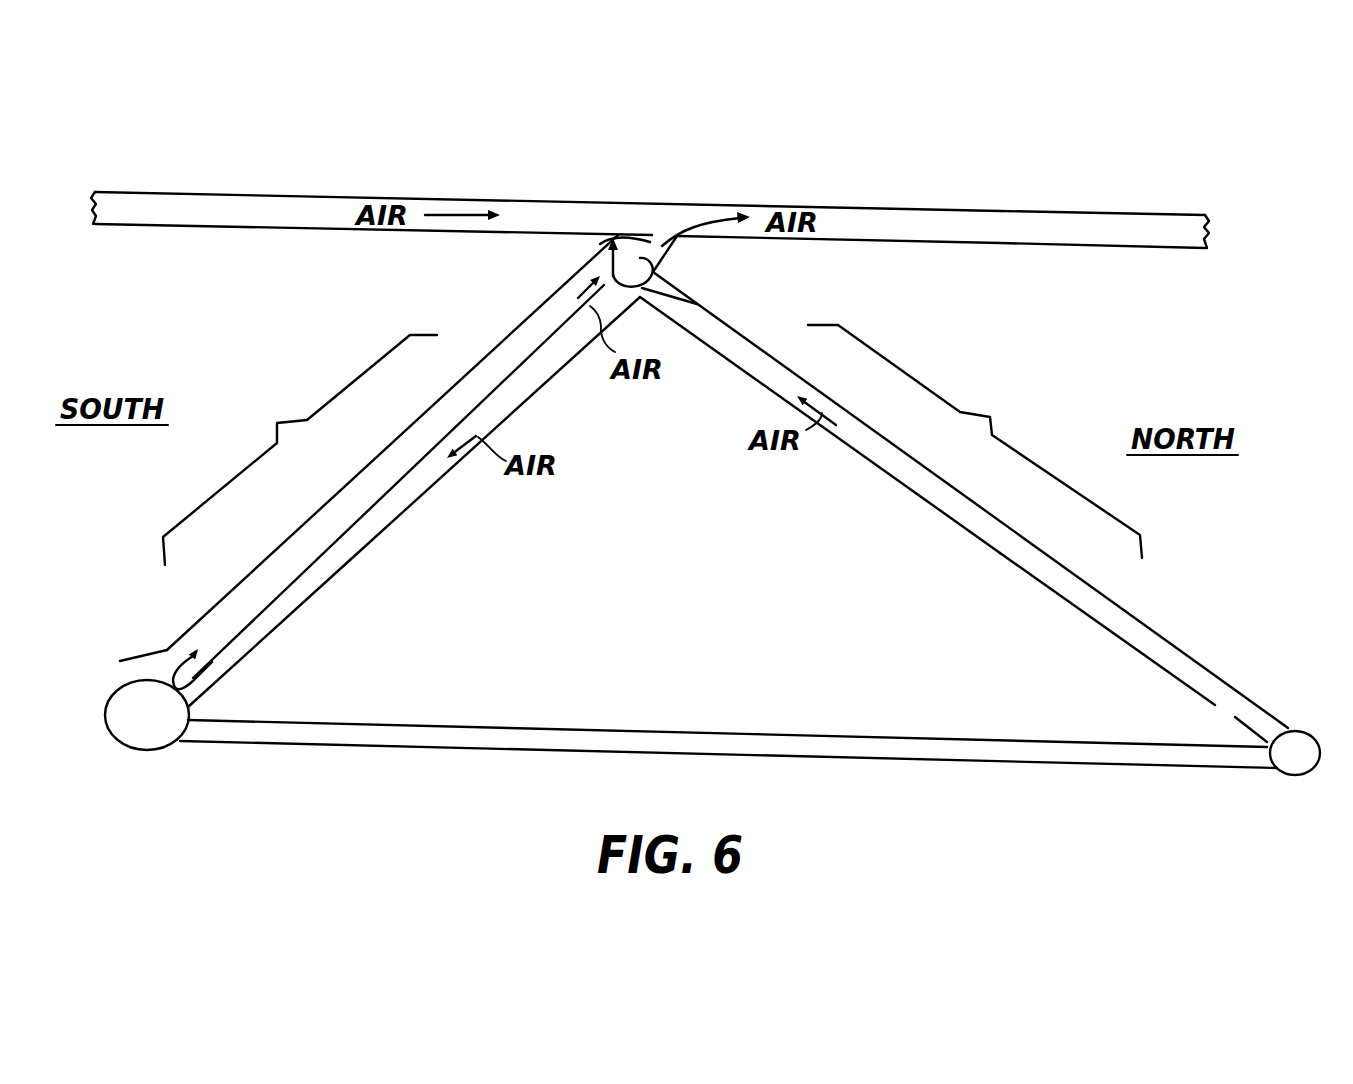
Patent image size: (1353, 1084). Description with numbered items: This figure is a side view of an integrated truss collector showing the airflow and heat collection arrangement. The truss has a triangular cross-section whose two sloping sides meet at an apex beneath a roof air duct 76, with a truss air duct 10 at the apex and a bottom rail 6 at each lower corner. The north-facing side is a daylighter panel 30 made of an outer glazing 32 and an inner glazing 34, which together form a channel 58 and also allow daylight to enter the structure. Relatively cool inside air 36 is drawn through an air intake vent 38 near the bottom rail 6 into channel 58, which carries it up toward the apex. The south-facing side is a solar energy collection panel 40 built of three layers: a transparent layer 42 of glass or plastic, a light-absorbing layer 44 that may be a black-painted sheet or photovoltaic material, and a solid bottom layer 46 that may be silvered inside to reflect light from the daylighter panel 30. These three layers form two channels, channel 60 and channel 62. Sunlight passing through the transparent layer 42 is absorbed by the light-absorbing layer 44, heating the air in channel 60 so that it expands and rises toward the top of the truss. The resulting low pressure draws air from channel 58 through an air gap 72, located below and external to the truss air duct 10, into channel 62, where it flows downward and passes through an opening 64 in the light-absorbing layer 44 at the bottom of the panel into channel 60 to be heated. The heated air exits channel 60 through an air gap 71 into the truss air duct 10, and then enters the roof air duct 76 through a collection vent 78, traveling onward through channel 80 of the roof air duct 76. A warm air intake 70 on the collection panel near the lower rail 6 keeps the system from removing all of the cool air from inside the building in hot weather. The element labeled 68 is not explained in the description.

The bottom rail 6 is at (145, 735).
The truss air duct 10 is at (608, 241).
The daylighter panel 30 is at (975, 441).
The outer glazing 32 is at (900, 448).
The inner glazing 34 is at (923, 497).
The inside air 36 is at (672, 589).
The air intake vent 38 is at (1227, 712).
The solar energy collection panel 40 is at (300, 450).
The transparent layer 42 is at (236, 552).
The light-absorbing layer 44 is at (473, 416).
The bottom layer 46 is at (366, 569).
The channel 58 is at (1000, 550).
The channel 60 is at (493, 358).
The channel 62 is at (413, 500).
The opening 64 is at (207, 690).
The junction chamber 68 is at (655, 273).
The warm air intake 70 is at (120, 660).
The air gap 71 is at (614, 237).
The air gap 72 is at (697, 308).
The roof air duct 76 is at (860, 208).
The collection vent 78 is at (703, 221).
The channel 80 is at (1033, 227).